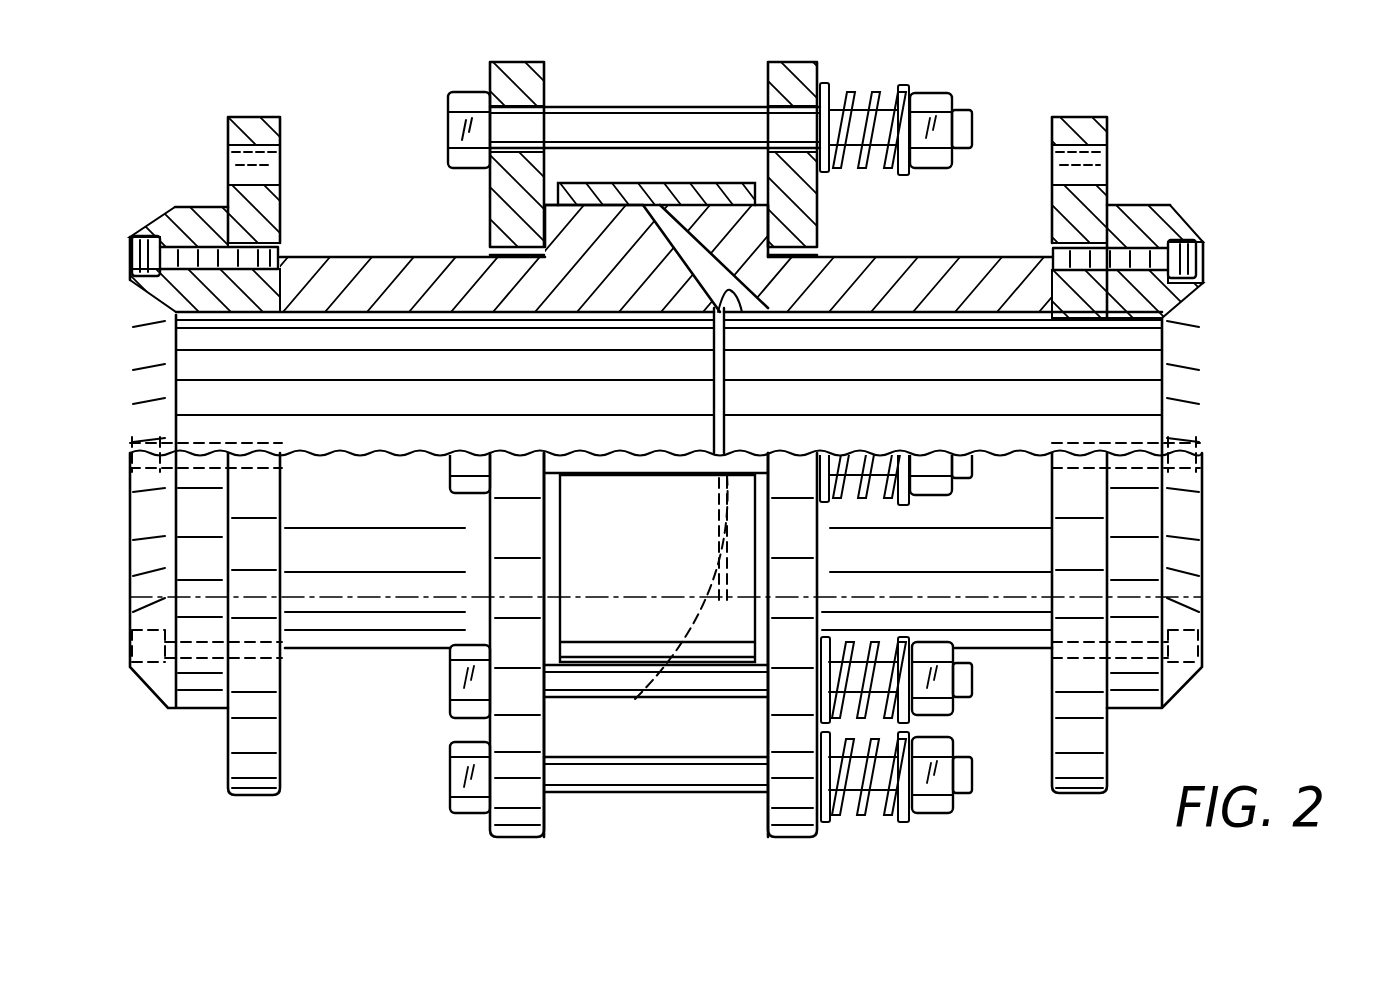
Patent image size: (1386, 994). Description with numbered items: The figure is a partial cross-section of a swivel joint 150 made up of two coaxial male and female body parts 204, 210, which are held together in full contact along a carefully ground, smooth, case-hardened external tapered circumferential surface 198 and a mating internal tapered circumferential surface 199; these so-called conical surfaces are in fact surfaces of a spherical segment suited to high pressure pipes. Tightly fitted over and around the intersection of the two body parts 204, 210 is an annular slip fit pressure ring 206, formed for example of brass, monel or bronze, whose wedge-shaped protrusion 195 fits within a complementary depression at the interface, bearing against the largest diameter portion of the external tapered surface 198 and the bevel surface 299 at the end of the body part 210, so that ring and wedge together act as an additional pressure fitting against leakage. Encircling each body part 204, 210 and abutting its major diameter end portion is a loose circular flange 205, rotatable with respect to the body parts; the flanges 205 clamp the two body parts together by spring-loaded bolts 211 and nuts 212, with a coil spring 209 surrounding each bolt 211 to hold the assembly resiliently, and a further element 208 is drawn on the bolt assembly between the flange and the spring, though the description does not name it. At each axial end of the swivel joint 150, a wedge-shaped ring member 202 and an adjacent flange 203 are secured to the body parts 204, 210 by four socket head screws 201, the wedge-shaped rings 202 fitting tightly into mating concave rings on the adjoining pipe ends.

The swivel joint 150 is at (636, 815).
The wedge-shaped protrusion 195 is at (643, 208).
The external tapered circumferential surface 198 is at (709, 288).
The internal tapered circumferential surface 199 is at (742, 312).
The socket head screw 201 is at (136, 236).
The wedge-shaped ring member 202 is at (178, 207).
The flange 203 is at (282, 115).
The male body part 204 is at (355, 257).
The loose circular flange 205 is at (768, 62).
The pressure ring 206 is at (712, 183).
The washer 208 is at (828, 83).
The coil spring 209 is at (866, 96).
The female body part 210 is at (955, 257).
The bolt 211 is at (718, 796).
The nut 212 is at (935, 814).
The bevel surface 299 is at (650, 208).